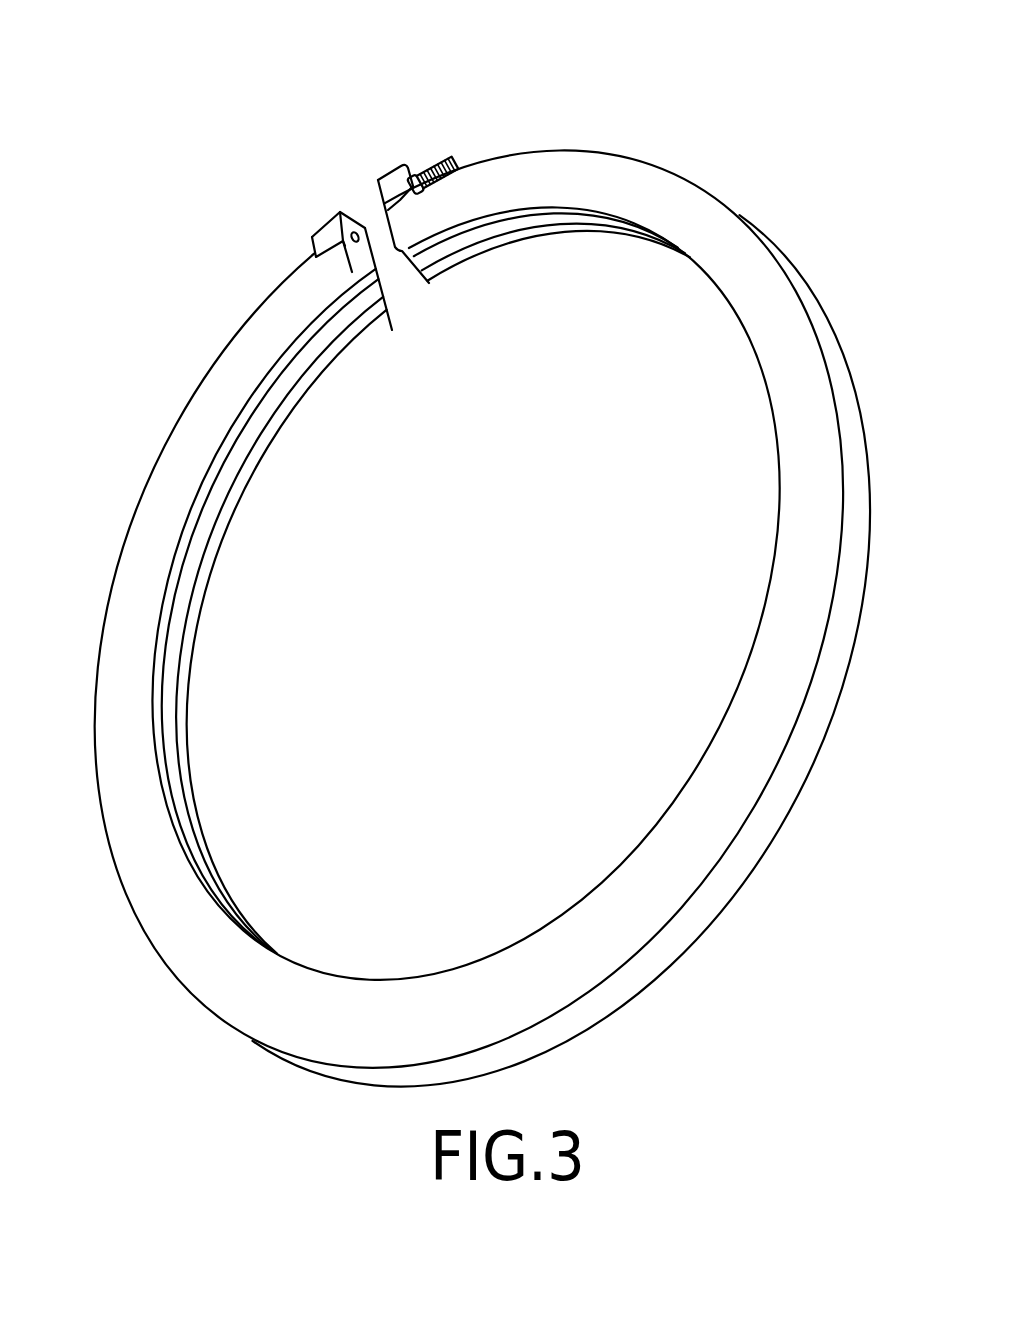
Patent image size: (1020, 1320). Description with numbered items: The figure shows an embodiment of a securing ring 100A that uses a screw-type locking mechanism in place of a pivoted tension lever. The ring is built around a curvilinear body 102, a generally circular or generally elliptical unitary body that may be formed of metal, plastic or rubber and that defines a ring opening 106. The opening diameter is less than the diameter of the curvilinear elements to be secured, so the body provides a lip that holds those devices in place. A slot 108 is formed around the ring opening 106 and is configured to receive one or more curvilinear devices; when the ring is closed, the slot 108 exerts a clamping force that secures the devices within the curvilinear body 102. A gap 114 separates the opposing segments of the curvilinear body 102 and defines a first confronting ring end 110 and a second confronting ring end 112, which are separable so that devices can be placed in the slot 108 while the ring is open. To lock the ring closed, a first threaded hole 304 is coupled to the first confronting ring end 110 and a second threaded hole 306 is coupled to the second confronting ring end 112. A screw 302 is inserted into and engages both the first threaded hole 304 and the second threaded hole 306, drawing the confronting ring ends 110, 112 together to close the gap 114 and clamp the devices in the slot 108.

The securing ring 100A is at (143, 215).
The curvilinear body 102 is at (690, 943).
The ring opening 106 is at (714, 340).
The slot 108 is at (180, 605).
The first confronting ring end 110 is at (388, 322).
The second confronting ring end 112 is at (429, 272).
The gap 114 is at (423, 328).
The screw 302 is at (462, 153).
The first threaded hole 304 is at (322, 228).
The second threaded hole 306 is at (403, 165).